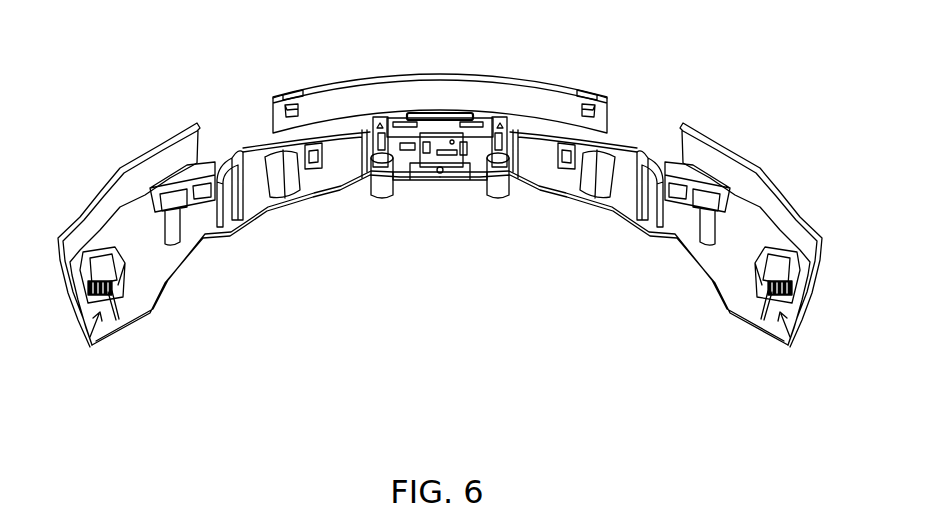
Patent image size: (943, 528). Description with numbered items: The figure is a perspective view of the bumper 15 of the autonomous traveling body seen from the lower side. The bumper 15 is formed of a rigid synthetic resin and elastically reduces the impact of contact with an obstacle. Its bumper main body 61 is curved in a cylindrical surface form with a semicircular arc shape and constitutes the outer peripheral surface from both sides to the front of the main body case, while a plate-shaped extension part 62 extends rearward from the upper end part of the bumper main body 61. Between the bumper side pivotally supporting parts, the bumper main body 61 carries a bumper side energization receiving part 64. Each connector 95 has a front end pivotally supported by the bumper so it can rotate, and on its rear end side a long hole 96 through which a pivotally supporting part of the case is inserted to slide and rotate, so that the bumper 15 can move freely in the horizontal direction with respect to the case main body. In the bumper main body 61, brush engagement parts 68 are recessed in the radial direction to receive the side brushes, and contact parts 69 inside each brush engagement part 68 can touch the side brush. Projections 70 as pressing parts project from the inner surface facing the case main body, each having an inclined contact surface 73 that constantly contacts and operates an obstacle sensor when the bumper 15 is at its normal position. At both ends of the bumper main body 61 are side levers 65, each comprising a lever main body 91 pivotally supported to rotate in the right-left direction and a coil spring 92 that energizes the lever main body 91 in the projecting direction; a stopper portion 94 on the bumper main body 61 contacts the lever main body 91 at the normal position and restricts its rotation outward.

The bumper 15 is at (481, 43).
The bumper main body 61 is at (531, 95).
The extension part 62 is at (740, 310).
The bumper side energization receiving part 64 is at (440, 174).
The side lever 65 is at (90, 347).
The brush engagement part 68 is at (250, 108).
The contact part 69 is at (270, 147).
The projection 70 is at (284, 97).
The contact surface 73 is at (293, 104).
The lever main body 91 is at (120, 283).
The coil spring 92 is at (113, 302).
The stopper portion 94 is at (85, 298).
The connector 95 is at (378, 185).
The long hole 96 is at (392, 182).